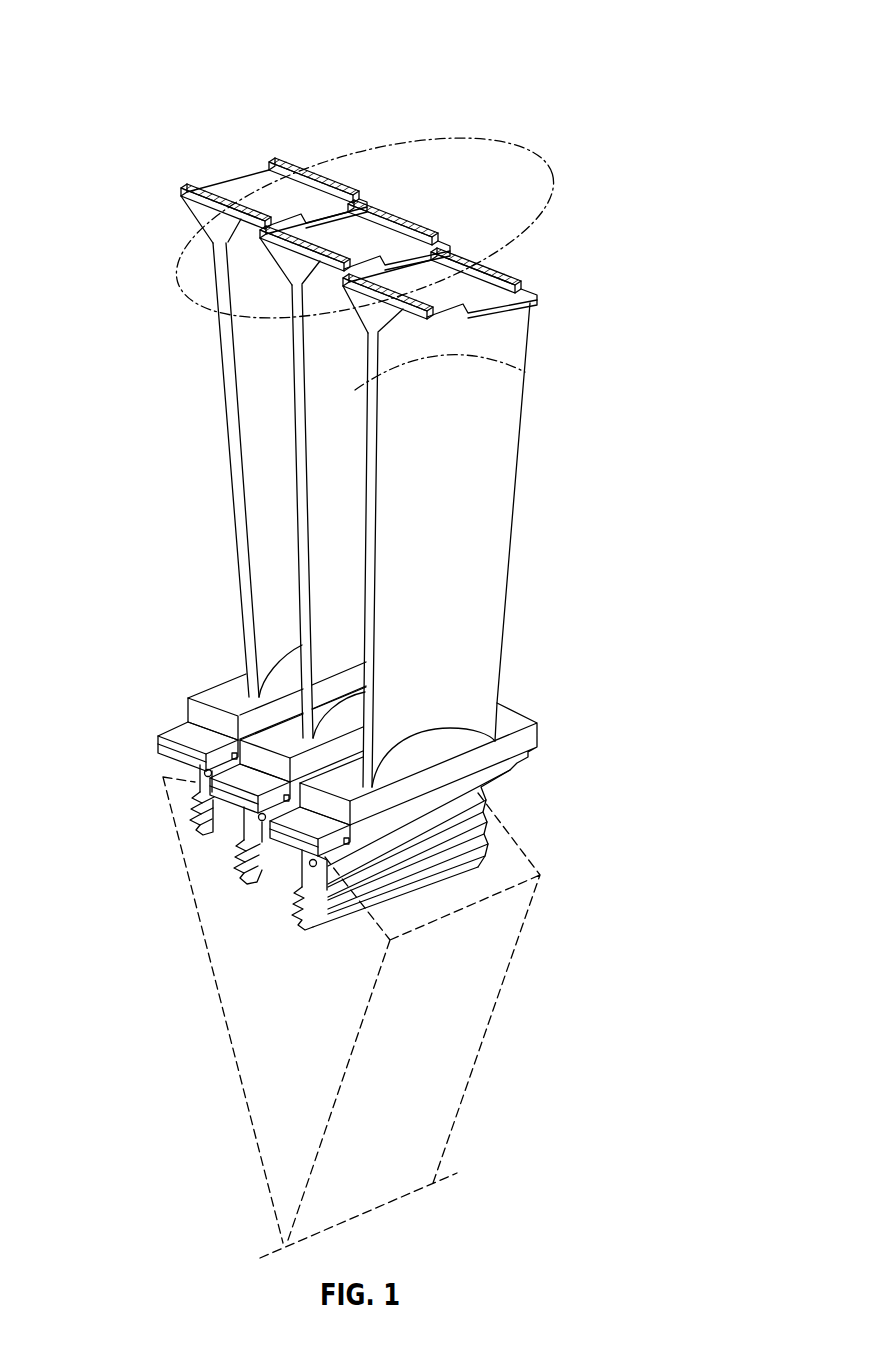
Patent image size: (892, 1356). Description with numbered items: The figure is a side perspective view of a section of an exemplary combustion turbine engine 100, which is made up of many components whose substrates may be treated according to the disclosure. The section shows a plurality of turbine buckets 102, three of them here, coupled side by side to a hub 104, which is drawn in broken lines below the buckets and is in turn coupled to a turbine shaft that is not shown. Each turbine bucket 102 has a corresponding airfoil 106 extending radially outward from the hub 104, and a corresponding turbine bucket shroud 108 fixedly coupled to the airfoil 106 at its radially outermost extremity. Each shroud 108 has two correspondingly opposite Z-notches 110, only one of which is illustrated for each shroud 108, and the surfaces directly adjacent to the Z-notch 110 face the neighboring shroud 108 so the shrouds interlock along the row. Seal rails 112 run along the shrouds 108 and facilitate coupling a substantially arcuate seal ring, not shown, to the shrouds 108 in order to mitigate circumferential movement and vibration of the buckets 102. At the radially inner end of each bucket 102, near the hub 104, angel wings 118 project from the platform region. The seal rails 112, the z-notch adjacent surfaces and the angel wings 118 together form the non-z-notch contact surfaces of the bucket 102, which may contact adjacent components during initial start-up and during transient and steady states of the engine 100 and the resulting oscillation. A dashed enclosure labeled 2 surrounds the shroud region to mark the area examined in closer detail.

The combustion turbine engine 100 is at (165, 45).
The turbine bucket 102 is at (247, 383).
The hub 104 is at (452, 1057).
The airfoil 106 is at (493, 452).
The turbine bucket shroud 108 is at (263, 177).
The Z-notch 110 is at (238, 173).
The seal rail 112 is at (273, 163).
The angel wing 118 is at (173, 751).
The section plane of FIG. 2 is at (178, 285).